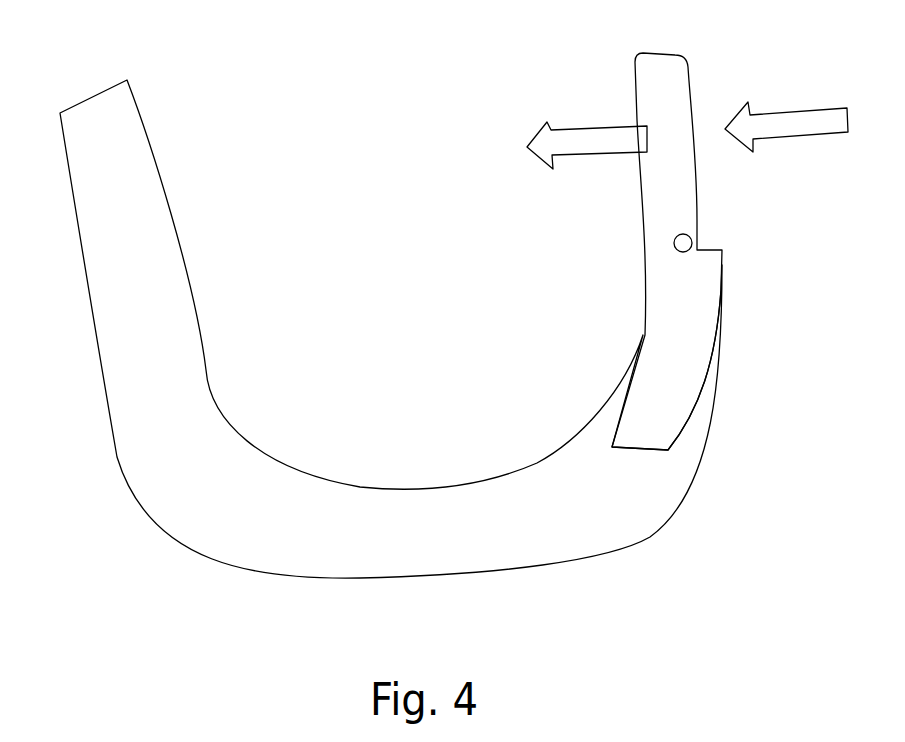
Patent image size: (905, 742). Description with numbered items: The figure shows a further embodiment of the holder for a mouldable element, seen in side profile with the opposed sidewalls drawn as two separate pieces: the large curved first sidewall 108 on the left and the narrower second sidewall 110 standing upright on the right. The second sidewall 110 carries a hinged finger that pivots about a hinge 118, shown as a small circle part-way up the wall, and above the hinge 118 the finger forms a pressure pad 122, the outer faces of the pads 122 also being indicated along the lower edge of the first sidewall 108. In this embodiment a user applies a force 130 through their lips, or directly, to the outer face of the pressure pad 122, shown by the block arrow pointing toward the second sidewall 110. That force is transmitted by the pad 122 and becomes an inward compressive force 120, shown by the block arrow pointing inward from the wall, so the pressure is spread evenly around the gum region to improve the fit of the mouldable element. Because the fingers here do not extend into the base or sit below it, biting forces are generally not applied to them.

The first sidewall 108 is at (110, 314).
The second sidewall 110 is at (705, 410).
The hinge 118 is at (691, 237).
The inward compressive forces 120 is at (580, 135).
The pressure pads 122 is at (642, 92).
The force 130 is at (800, 115).